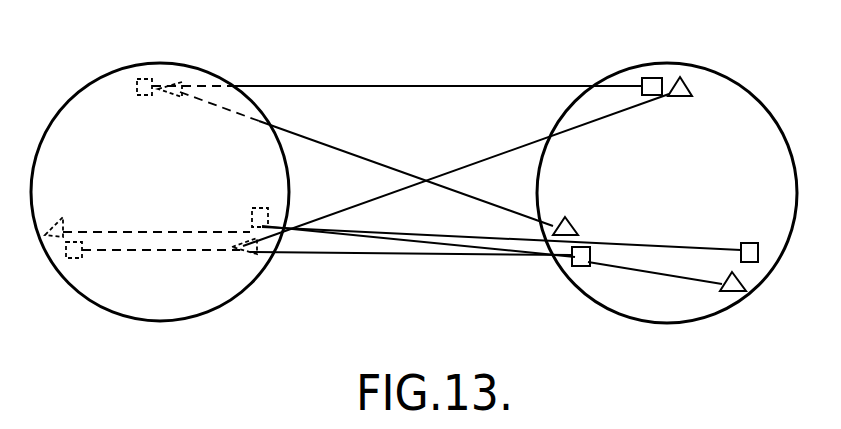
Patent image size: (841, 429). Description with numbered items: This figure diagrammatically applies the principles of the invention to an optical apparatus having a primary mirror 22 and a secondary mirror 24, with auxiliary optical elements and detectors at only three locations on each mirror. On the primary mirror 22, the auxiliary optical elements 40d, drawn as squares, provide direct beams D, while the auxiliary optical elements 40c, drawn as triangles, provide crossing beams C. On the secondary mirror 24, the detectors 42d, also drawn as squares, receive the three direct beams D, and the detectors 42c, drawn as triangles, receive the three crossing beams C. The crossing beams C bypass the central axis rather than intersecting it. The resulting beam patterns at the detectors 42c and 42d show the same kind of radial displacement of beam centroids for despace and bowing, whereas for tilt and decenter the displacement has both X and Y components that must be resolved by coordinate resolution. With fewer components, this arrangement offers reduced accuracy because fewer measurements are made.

The primary mirror 22 is at (53, 118).
The secondary mirror 24 is at (783, 132).
The auxiliary optical elements providing crossing beams 40c is at (178, 82).
The auxiliary optical elements providing direct beams 40d is at (137, 79).
The detectors receiving crossing beams 42c is at (684, 82).
The detectors receiving direct beams 42d is at (652, 78).
The crossing beam C is at (372, 159).
The direct beam D is at (412, 86).